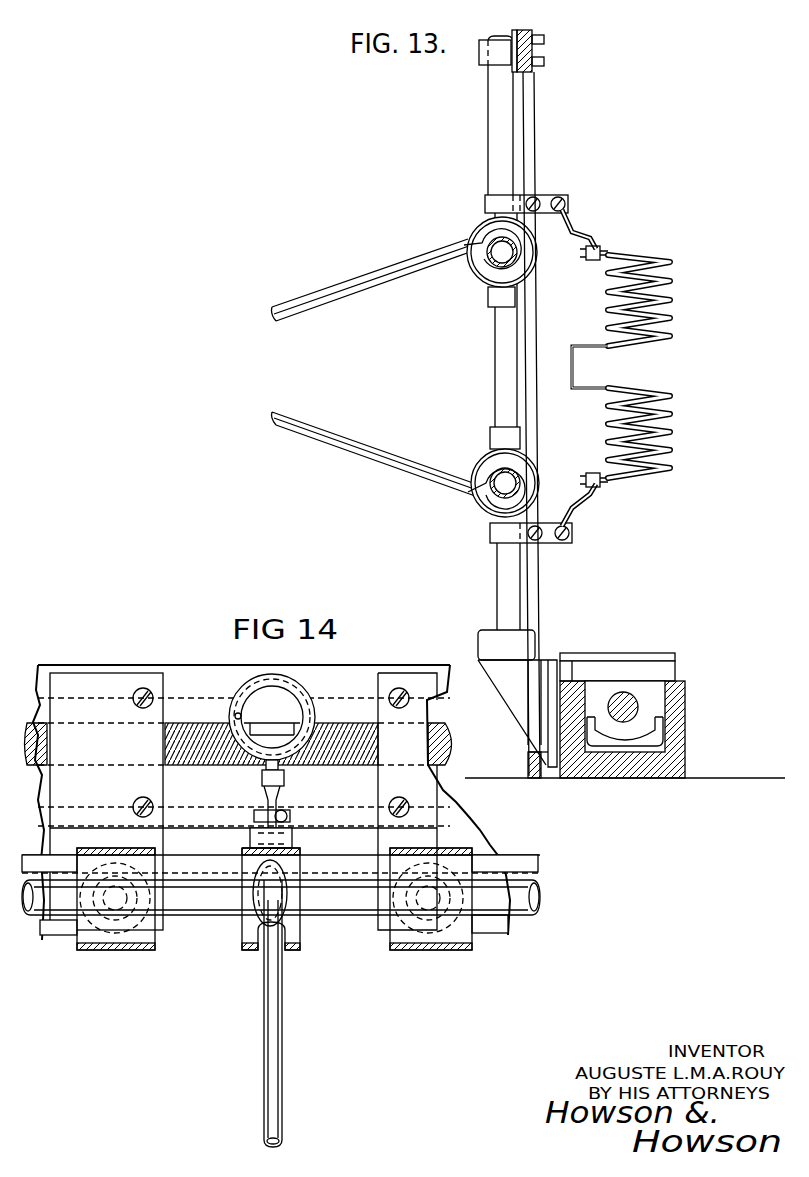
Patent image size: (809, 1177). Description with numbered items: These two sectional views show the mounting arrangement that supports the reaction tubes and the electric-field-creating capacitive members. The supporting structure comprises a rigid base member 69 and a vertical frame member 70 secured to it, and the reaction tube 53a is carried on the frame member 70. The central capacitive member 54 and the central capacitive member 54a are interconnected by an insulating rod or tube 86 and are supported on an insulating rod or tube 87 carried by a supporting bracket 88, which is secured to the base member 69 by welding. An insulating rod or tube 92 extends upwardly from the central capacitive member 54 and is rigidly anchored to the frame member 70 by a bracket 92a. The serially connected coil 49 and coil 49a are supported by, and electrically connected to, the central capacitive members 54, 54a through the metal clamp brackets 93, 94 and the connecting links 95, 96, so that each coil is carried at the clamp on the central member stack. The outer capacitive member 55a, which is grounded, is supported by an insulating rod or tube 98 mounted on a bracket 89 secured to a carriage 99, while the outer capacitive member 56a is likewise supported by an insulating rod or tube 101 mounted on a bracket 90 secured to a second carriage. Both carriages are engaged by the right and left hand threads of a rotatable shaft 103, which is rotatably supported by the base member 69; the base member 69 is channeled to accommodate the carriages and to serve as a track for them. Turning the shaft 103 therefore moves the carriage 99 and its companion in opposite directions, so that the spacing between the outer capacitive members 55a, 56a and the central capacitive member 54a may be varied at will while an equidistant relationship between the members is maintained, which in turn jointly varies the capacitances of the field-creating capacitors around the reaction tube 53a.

In FIG. 13, the bracket 92a is at (484, 63).
In FIG. 13, the insulating rod or tube 92 is at (488, 124).
In FIG. 13, the metal clamp bracket 93 is at (500, 197).
In FIG. 13, the central capacitive member 54 is at (482, 225).
In FIG. 13, the connecting link 95 is at (578, 210).
In FIG. 13, the coil 49 is at (673, 318).
In FIG. 13, the insulating rod or tube 86 is at (495, 375).
In FIG. 13, the central capacitive member 54a is at (478, 463).
In FIG. 14, the central capacitive member 54a is at (300, 950).
In FIG. 13, the coil 49a is at (673, 446).
In FIG. 14, the coil 49a is at (315, 709).
In FIG. 13, the connecting link 96 is at (582, 518).
In FIG. 14, the connecting link 96 is at (278, 806).
In FIG. 13, the metal clamp bracket 94 is at (489, 536).
In FIG. 14, the metal clamp bracket 94 is at (242, 925).
In FIG. 13, the insulating rod or tube 87 is at (498, 587).
In FIG. 14, the insulating rod or tube 87 is at (256, 905).
In FIG. 13, the vertical frame member 70 is at (541, 586).
In FIG. 14, the vertical frame member 70 is at (526, 856).
In FIG. 13, the supporting bracket 88 is at (547, 657).
In FIG. 14, the supporting bracket 88 is at (292, 844).
In FIG. 13, the bracket 89 is at (639, 653).
In FIG. 14, the bracket 89 is at (57, 935).
In FIG. 13, the carriage 99 is at (665, 664).
In FIG. 13, the rotatable shaft 103 is at (613, 694).
In FIG. 14, the rotatable shaft 103 is at (222, 766).
In FIG. 13, the rigid base member 69 is at (686, 727).
In FIG. 14, the rigid base member 69 is at (68, 664).
In FIG. 14, the insulating rod or tube 101 is at (423, 901).
In FIG. 14, the insulating rod or tube 98 is at (133, 905).
In FIG. 14, the outer capacitive member 55a is at (124, 951).
In FIG. 14, the outer capacitive member 56a is at (432, 951).
In FIG. 14, the bracket 90 is at (505, 935).
In FIG. 14, the reaction tube 53a is at (518, 919).